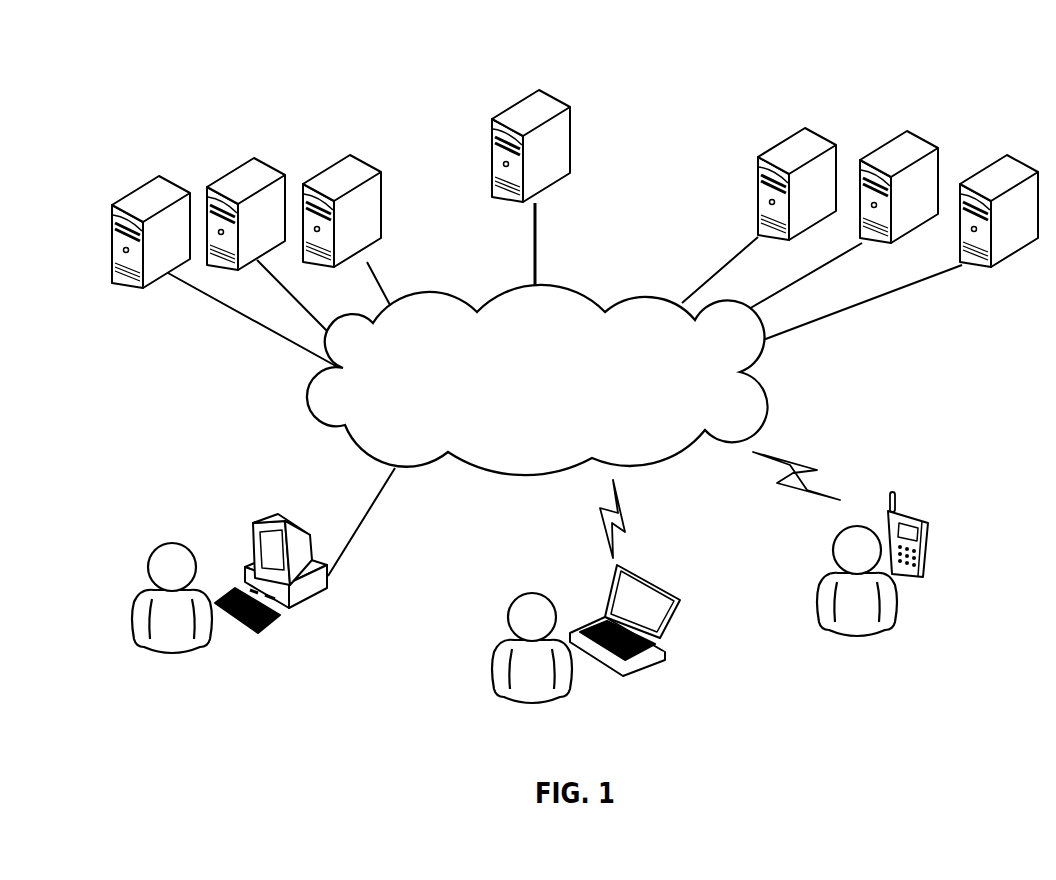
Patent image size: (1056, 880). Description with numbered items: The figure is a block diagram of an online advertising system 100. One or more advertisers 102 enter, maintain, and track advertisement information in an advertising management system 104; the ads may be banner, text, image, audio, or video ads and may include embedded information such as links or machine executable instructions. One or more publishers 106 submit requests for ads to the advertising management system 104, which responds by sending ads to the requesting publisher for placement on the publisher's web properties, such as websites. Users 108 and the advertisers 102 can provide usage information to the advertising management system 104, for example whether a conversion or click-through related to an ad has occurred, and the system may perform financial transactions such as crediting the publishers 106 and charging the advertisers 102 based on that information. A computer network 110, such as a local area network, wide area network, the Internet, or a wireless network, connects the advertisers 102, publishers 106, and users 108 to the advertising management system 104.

The online advertising system 100 is at (214, 101).
The advertisers 102 is at (185, 375).
The advertising management system 104 is at (561, 76).
The publishers 106 is at (968, 356).
The users 108 is at (517, 558).
The computer network 110 is at (524, 401).